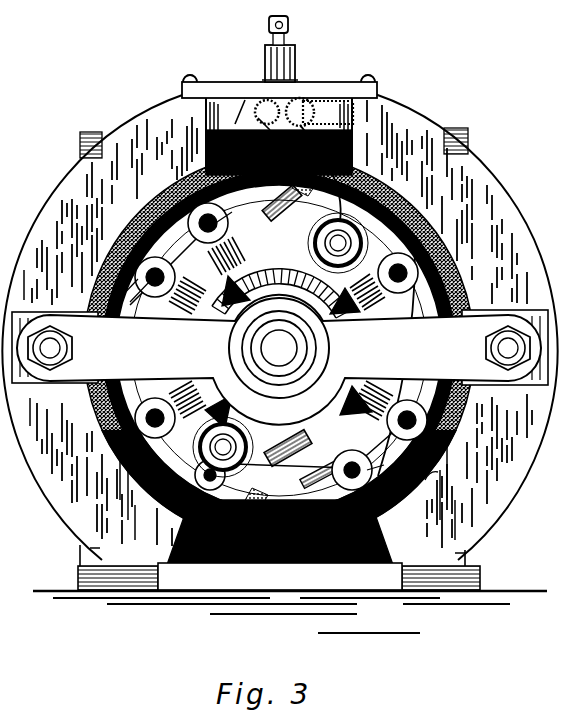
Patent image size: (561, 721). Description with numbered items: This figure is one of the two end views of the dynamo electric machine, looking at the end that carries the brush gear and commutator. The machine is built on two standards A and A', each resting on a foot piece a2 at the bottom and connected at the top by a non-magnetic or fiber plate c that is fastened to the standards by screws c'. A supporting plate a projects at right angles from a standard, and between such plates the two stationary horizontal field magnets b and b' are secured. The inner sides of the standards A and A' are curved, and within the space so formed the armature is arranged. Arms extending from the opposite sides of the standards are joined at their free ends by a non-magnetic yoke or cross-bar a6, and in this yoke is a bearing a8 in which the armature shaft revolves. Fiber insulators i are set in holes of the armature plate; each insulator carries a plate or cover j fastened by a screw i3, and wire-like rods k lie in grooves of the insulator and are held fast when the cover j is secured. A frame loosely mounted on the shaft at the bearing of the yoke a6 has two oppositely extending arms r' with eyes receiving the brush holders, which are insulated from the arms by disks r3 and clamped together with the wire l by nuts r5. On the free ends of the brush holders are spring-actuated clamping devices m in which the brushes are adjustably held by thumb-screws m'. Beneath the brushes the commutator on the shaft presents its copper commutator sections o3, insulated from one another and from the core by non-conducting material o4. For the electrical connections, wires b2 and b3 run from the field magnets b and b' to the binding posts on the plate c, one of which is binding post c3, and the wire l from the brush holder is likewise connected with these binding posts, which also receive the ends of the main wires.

The standard A is at (279, 327).
The standard A' is at (251, 184).
The supporting plate a is at (279, 348).
The foot piece a2 is at (78, 573).
The yoke or cross-bar a6 is at (280, 360).
The bearing a8 is at (324, 362).
The field magnet b is at (279, 334).
The field magnet b' is at (434, 486).
The wire b2 is at (279, 137).
The wire b3 is at (262, 115).
The non-magnetic or fiber plate c is at (279, 82).
The screw c' is at (290, 70).
The binding post c3 is at (296, 56).
The insulator i is at (281, 346).
The screw i3 is at (180, 444).
The plate or cover j is at (255, 336).
The wire-like rod k is at (279, 341).
The wire l is at (259, 346).
The spring-actuated clamping device m is at (298, 470).
The thumb-screw m' is at (270, 203).
The commutator section o3 is at (307, 328).
The non-conducting material o4 is at (296, 284).
The arm r' is at (297, 318).
The disk r3 is at (250, 440).
The nut r5 is at (240, 435).